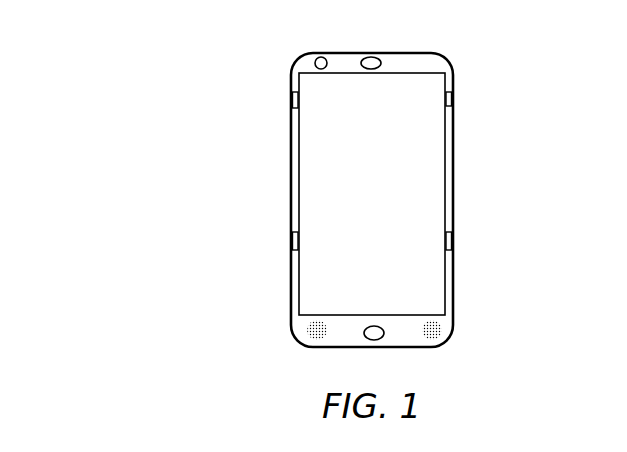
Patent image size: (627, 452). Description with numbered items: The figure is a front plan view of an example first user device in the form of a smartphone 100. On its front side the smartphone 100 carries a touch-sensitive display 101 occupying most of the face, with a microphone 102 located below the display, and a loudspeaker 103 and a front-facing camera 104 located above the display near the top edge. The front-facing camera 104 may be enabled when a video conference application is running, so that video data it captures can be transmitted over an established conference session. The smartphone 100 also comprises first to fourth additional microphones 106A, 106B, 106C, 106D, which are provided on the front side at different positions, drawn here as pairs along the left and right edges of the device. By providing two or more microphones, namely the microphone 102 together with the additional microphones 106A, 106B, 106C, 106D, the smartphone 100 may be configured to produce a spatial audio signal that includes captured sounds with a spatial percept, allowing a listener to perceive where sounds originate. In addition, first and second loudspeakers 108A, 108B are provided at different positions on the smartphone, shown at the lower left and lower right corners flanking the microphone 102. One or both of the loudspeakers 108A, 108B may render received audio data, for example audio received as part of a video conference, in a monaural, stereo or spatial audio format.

The smartphone 100 is at (212, 180).
The touch-sensitive display 101 is at (395, 172).
The microphone 102 is at (380, 334).
The loudspeaker 103 is at (352, 53).
The front-facing camera 104 is at (318, 62).
The first additional microphone 106A is at (290, 237).
The second additional microphone 106B is at (290, 95).
The third additional microphone 106C is at (453, 240).
The fourth additional microphone 106D is at (453, 96).
The first additional loudspeaker 108A is at (318, 330).
The second additional loudspeaker 108B is at (432, 330).